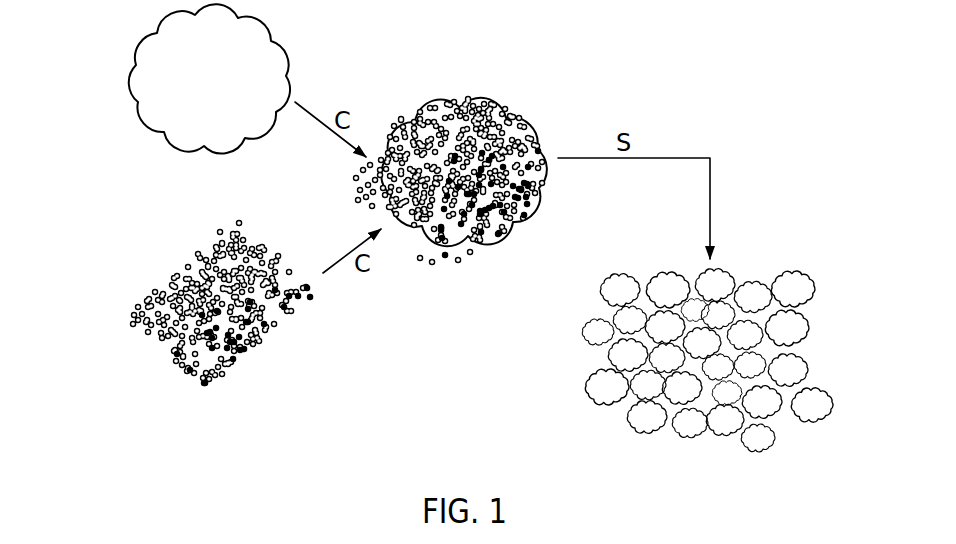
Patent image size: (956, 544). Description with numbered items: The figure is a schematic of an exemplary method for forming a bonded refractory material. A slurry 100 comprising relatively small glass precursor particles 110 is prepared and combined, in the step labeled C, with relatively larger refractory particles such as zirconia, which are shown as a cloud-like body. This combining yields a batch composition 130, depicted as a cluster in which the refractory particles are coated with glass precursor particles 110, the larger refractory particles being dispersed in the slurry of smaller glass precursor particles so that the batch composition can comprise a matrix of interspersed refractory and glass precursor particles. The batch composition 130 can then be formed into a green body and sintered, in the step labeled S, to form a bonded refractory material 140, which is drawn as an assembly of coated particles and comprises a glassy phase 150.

The slurry 100 is at (178, 338).
The glass precursor particles 110 is at (217, 397).
The batch composition 130 is at (508, 90).
The bonded refractory material 140 is at (728, 354).
The glassy phase 150 is at (745, 430).